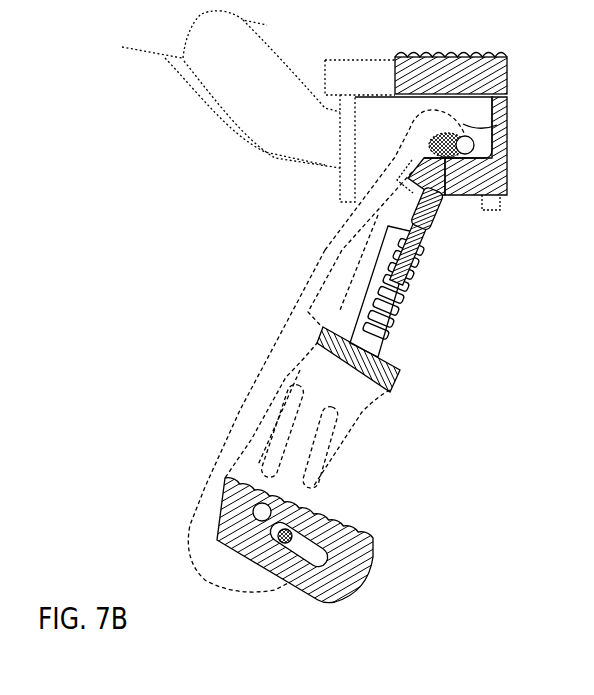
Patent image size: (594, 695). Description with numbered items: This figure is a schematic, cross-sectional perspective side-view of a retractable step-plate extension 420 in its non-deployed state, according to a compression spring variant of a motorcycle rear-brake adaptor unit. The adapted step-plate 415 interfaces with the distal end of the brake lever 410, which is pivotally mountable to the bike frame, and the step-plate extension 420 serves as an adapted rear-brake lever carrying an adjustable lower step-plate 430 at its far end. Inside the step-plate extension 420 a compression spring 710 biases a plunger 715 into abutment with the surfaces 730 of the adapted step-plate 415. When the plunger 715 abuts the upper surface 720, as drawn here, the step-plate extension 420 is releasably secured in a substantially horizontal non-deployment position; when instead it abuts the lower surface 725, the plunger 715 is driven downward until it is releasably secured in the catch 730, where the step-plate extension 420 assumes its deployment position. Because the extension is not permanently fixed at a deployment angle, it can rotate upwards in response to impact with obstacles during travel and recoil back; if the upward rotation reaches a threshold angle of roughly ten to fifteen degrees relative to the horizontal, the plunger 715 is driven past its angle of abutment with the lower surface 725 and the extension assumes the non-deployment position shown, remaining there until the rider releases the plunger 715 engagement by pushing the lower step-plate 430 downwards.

The brake lever 410 is at (262, 53).
The adapted step-plate 415 is at (490, 54).
The step-plate extension 420 is at (243, 402).
The lower step-plate 430 is at (371, 538).
The compression spring 710 is at (388, 318).
The plunger 715 is at (440, 218).
The upper surface 720 is at (412, 164).
The lower surface 725 is at (407, 190).
The catch 730 is at (444, 193).